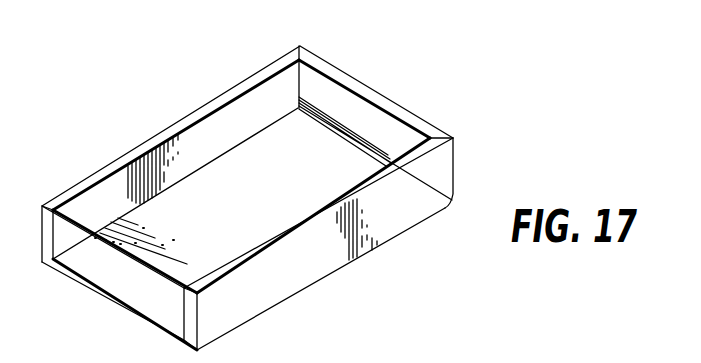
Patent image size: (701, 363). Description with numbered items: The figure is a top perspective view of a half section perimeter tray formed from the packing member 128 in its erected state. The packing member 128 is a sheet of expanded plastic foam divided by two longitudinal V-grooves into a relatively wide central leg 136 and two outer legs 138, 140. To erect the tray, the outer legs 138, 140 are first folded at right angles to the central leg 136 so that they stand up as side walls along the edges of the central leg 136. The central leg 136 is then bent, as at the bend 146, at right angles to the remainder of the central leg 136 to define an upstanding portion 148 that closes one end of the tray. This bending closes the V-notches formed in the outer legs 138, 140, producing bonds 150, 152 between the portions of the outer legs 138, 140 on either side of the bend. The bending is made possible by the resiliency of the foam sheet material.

The packing member 128 is at (437, 110).
The central leg 136 is at (125, 288).
The outer leg 138 is at (130, 114).
The outer leg 140 is at (311, 273).
The bend 146 is at (340, 174).
The upstanding portion 148 is at (357, 106).
The bond 150 is at (242, 100).
The bond 152 is at (433, 196).